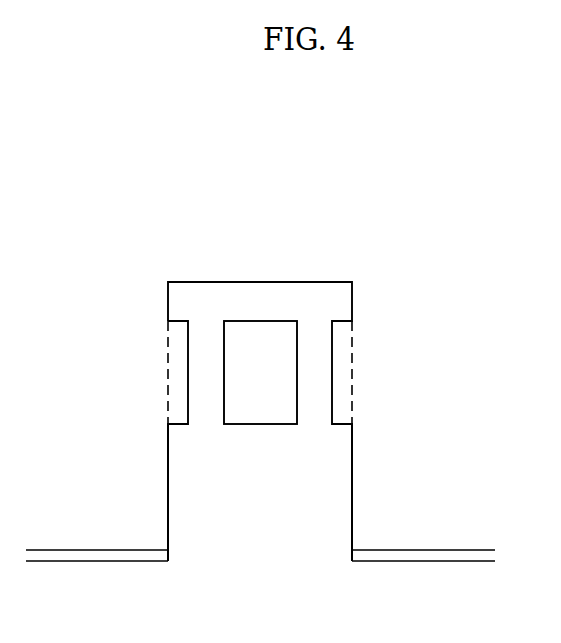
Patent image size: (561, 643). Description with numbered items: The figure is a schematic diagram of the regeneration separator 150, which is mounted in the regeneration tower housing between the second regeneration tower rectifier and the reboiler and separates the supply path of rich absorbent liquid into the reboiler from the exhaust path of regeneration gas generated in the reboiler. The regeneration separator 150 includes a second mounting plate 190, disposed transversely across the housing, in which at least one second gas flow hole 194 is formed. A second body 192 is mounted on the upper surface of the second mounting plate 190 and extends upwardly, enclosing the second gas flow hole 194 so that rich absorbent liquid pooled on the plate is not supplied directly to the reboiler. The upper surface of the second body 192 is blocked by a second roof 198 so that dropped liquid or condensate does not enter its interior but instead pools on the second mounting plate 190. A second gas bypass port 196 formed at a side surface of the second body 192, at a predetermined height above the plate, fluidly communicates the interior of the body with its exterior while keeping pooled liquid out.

The regeneration separator 150 is at (423, 396).
The second mounting plate 190 is at (97, 550).
The second body 192 is at (353, 493).
The second gas flow hole 194 is at (253, 561).
The second gas bypass port 196 is at (261, 353).
The second roof 198 is at (312, 282).